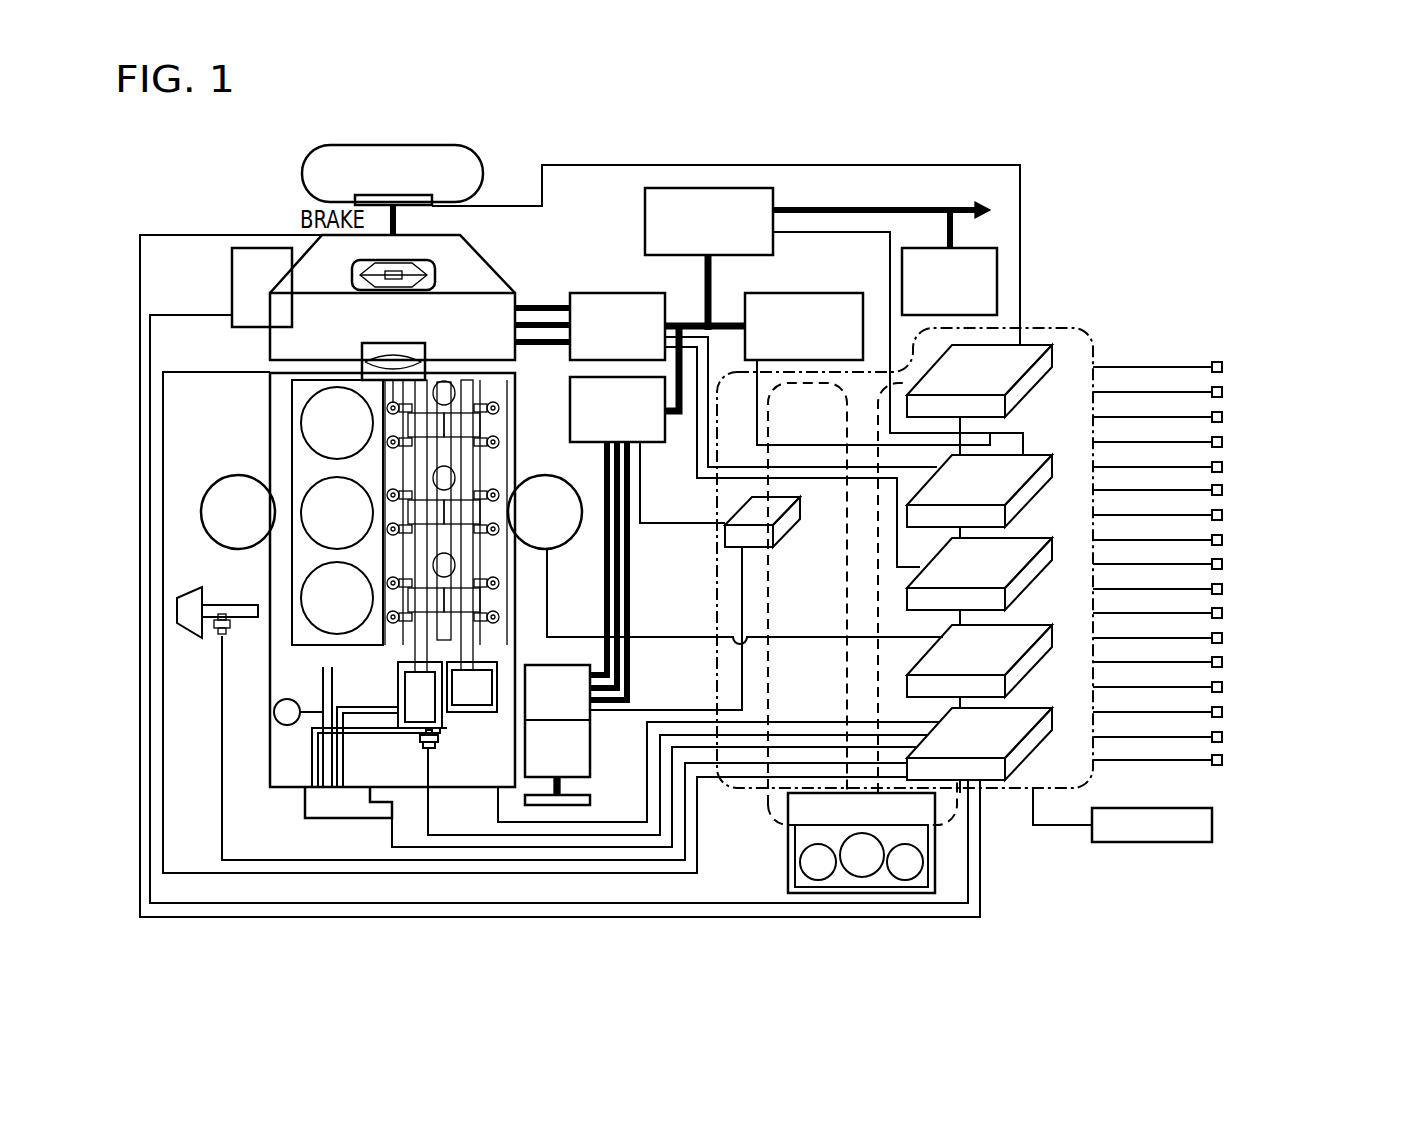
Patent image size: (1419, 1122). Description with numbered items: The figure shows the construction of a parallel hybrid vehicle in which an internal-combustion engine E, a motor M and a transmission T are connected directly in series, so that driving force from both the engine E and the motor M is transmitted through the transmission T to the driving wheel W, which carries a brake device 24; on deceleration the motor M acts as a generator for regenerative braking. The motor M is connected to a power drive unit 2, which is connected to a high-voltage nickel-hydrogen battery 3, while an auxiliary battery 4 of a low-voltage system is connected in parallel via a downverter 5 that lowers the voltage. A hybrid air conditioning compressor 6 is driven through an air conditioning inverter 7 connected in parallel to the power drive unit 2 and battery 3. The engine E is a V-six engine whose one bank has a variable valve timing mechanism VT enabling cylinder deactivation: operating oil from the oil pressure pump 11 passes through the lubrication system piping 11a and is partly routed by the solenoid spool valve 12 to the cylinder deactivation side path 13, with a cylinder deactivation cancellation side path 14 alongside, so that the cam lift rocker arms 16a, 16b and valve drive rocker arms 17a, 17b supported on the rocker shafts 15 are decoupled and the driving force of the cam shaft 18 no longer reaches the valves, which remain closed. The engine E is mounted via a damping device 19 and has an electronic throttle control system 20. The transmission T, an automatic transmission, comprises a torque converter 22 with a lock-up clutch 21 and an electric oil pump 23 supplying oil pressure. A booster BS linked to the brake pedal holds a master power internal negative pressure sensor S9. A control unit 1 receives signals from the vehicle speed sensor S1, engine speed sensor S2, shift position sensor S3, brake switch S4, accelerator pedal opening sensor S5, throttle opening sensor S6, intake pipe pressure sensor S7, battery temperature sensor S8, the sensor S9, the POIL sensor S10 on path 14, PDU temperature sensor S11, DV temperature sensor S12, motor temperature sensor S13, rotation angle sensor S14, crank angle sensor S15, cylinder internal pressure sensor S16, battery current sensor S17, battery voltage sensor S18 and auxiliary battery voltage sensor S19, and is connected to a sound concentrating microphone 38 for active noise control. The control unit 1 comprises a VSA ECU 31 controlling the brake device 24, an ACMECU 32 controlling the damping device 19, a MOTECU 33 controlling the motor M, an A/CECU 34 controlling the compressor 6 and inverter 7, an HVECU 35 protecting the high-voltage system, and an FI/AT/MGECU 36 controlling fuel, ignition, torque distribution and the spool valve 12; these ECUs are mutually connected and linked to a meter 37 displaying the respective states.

The control unit 1 is at (1065, 328).
The power drive unit 2 is at (620, 293).
The nickel-hydrogen battery 3 is at (830, 293).
The auxiliary battery 4 is at (975, 248).
The downverter 5 is at (645, 210).
The hybrid air conditioning compressor 6 is at (573, 662).
The air conditioning inverter 7 is at (650, 443).
The oil pressure pump 11 is at (288, 725).
The lubrication system piping 11a is at (332, 678).
The spool valve 12 is at (305, 800).
The cylinder deactivation side path 13 is at (470, 695).
The cylinder deactivation cancellation side path 14 is at (397, 720).
The rocker shaft 15 is at (405, 682).
The cam lift rocker arm 16a is at (397, 430).
The cam lift rocker arm 16b is at (488, 423).
The valve drive rocker arm 17a is at (387, 410).
The valve drive rocker arm 17b is at (500, 408).
The cam shaft 18 is at (447, 392).
The damping device 19 is at (238, 549).
The electronic throttle control system 20 is at (362, 350).
The lock-up clutch 21 is at (352, 290).
The torque converter 22 is at (442, 250).
The electric oil pump 23 is at (232, 280).
The brake device 24 is at (355, 202).
The VSA ECU 31 is at (1035, 343).
The ACMECU 32 is at (1035, 625).
The MOTECU 33 is at (1035, 538).
The A/CECU 34 is at (798, 512).
The HVECU 35 is at (1035, 455).
The FI/AT/MGECU 36 is at (1035, 708).
The meter 37 is at (788, 873).
The sound concentrating microphone 38 is at (1212, 826).
The driving wheel W is at (302, 170).
The transmission T is at (485, 246).
The motor M is at (497, 303).
The internal-combustion engine E is at (270, 420).
The variable valve timing mechanism VT is at (492, 386).
The booster BS is at (192, 587).
The master power internal negative pressure sensor S9 is at (222, 640).
The POIL sensor S10 is at (438, 742).
The vehicle speed sensor S1 is at (1222, 367).
The engine speed sensor S2 is at (1222, 392).
The shift position sensor S3 is at (1222, 417).
The brake switch S4 is at (1222, 442).
The accelerator pedal opening sensor S5 is at (1222, 467).
The throttle opening sensor S6 is at (1222, 490).
The intake pipe pressure sensor S7 is at (1222, 515).
The battery temperature sensor S8 is at (1222, 540).
The PDU temperature sensor S11 is at (1222, 564).
The DV temperature sensor S12 is at (1222, 589).
The motor temperature sensor S13 is at (1222, 613).
The rotation angle sensor S14 is at (1222, 638).
The crank angle sensor S15 is at (1222, 662).
The cylinder internal pressure sensor S16 is at (1222, 687).
The battery current sensor S17 is at (1222, 712).
The battery voltage sensor S18 is at (1222, 737).
The auxiliary battery voltage sensor S19 is at (1222, 760).